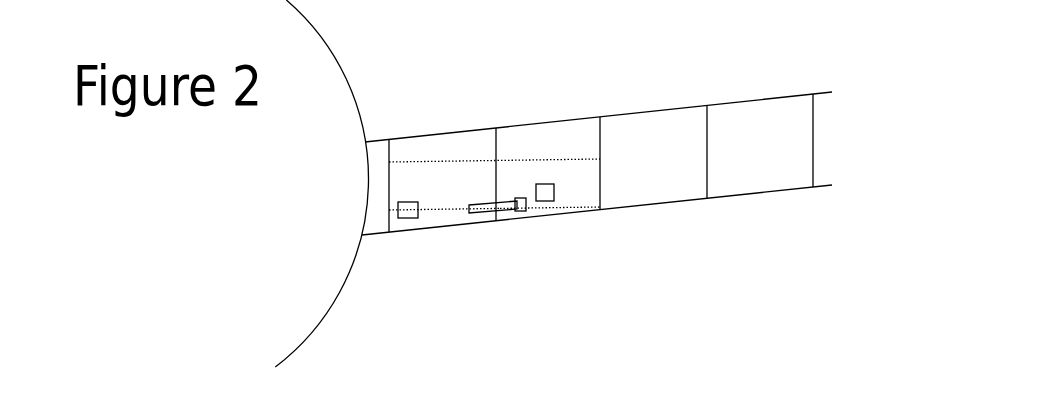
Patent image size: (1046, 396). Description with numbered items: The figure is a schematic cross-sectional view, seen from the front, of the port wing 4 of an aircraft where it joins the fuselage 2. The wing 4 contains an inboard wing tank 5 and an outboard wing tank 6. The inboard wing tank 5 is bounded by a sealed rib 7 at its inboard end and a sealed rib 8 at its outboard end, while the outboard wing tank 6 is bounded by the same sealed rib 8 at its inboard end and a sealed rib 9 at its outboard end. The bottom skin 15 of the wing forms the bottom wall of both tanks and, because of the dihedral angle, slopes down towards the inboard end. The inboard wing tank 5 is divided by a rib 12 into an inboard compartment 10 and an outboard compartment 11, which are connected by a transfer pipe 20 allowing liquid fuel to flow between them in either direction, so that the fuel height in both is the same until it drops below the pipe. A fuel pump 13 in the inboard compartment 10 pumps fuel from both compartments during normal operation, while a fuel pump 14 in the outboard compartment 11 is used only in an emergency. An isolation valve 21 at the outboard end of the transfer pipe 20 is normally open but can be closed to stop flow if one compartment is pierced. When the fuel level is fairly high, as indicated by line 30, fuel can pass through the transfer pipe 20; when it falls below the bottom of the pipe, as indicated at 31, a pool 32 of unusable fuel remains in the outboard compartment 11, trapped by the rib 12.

The fuselage 2 is at (357, 107).
The port wing 4 is at (757, 100).
The inboard wing tank 5 is at (505, 277).
The outboard wing tank 6 is at (710, 246).
The sealed rib 7 is at (388, 190).
The sealed rib 8 is at (600, 143).
The sealed rib 9 is at (813, 142).
The inboard compartment 10 is at (425, 192).
The outboard compartment 11 is at (536, 156).
The rib 12 is at (496, 150).
The fuel pump 13 is at (407, 218).
The fuel pump 14 is at (546, 193).
The bottom skin 15 is at (770, 192).
The transfer pipe 20 is at (487, 211).
The isolation valve 21 is at (521, 211).
The line 30 is at (579, 158).
The fuel level 31 is at (440, 211).
The pool of unusable fuel 32 is at (545, 212).